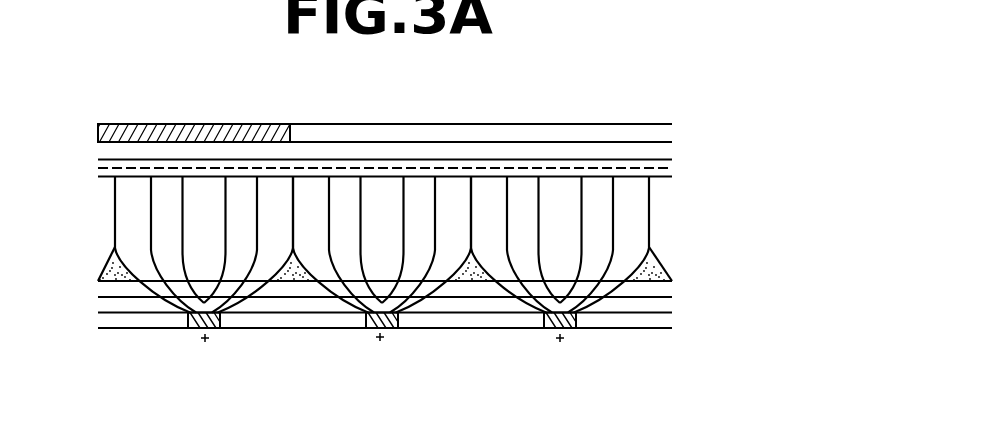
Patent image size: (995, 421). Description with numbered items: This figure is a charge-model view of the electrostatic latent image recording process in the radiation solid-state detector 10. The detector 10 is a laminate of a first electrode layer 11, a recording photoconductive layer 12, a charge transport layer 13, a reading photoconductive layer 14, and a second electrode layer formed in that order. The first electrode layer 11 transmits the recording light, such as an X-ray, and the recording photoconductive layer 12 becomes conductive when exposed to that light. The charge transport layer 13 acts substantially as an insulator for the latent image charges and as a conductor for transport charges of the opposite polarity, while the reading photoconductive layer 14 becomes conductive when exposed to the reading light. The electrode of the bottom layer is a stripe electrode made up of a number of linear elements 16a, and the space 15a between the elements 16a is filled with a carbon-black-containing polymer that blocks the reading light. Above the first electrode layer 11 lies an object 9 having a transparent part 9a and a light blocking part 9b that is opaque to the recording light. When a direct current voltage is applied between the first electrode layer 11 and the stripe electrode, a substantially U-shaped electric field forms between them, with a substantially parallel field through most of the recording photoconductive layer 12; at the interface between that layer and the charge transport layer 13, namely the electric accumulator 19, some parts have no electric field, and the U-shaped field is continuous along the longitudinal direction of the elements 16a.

The object 9 is at (385, 102).
The transparent part 9a is at (660, 135).
The light blocking part 9b is at (103, 128).
The radiation solid-state detector 10 is at (401, 271).
The first electrode layer 11 is at (103, 167).
The recording photoconductive layer 12 is at (103, 213).
The charge transport layer 13 is at (105, 290).
The reading photoconductive layer 14 is at (105, 303).
The space 15a is at (125, 322).
The elements 16a is at (197, 325).
The electric accumulator 19 is at (662, 263).